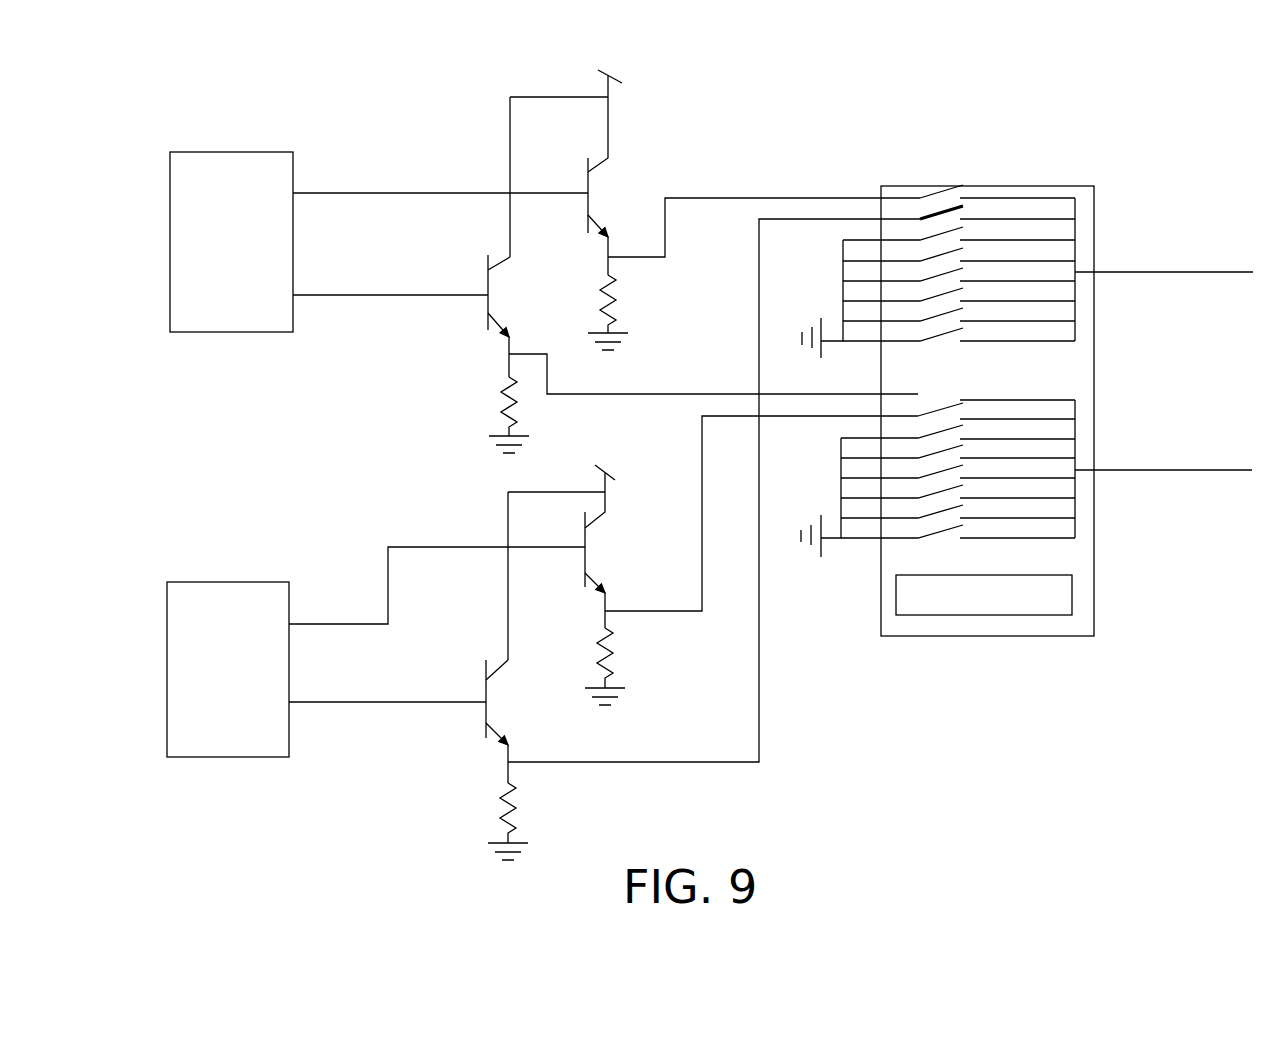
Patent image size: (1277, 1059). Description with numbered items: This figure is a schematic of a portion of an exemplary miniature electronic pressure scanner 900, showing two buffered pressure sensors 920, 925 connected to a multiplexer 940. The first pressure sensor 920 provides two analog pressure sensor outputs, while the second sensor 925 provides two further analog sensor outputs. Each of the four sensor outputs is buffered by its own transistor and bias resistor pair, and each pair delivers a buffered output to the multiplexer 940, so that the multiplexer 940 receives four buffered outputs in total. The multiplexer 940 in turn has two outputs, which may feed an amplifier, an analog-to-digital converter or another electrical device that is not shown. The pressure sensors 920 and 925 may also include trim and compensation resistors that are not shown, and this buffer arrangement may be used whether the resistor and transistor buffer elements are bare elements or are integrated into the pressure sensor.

The miniature electronic pressure scanner 900 is at (998, 782).
The pressure sensor 920 is at (208, 152).
The pressure sensor 925 is at (205, 582).
The multiplexer 940 is at (1053, 186).